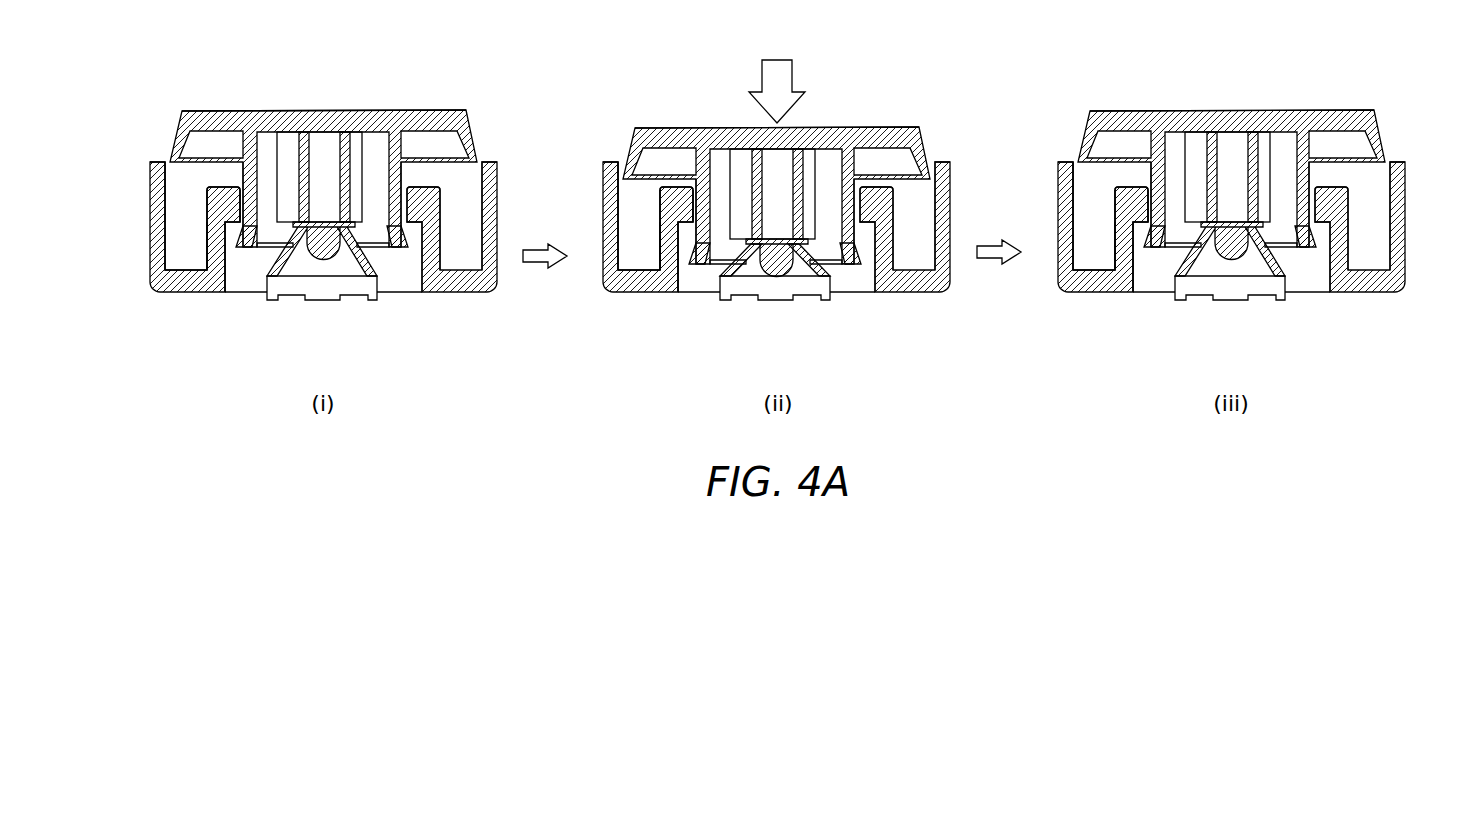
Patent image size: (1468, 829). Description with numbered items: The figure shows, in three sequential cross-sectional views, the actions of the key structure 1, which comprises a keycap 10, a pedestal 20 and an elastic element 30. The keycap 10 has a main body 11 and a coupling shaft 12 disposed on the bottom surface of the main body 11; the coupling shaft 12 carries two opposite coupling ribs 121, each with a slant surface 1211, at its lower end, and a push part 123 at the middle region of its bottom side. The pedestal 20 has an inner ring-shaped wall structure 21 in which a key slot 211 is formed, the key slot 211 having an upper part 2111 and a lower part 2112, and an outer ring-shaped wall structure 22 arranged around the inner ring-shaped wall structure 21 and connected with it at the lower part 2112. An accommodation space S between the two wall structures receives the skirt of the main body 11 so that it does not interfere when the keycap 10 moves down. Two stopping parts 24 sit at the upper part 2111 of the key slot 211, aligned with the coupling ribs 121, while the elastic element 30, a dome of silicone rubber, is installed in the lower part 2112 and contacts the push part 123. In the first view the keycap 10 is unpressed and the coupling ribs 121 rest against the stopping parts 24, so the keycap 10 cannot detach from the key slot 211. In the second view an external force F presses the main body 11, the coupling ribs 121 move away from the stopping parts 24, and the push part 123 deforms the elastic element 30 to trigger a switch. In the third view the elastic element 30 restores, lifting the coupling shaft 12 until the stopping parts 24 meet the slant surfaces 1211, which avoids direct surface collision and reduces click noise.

The key structure 1 is at (1020, 49).
The keycap 10 is at (777, 159).
The main body 11 is at (778, 78).
The coupling shaft 12 is at (779, 166).
The coupling rib 121 is at (804, 170).
The slant surface 1211 is at (775, 287).
The push part 123 is at (760, 154).
The pedestal 20 is at (802, 246).
The inner ring-shaped wall structure 21 is at (627, 242).
The key slot 211 is at (786, 315).
The upper part of key slot 2111 is at (615, 176).
The lower part of key slot 2112 is at (644, 286).
The outer ring-shaped wall structure 22 is at (742, 216).
The stopping part 24 is at (913, 196).
The elastic element 30 is at (776, 285).
The accommodation space S is at (611, 216).
The external force F is at (777, 76).